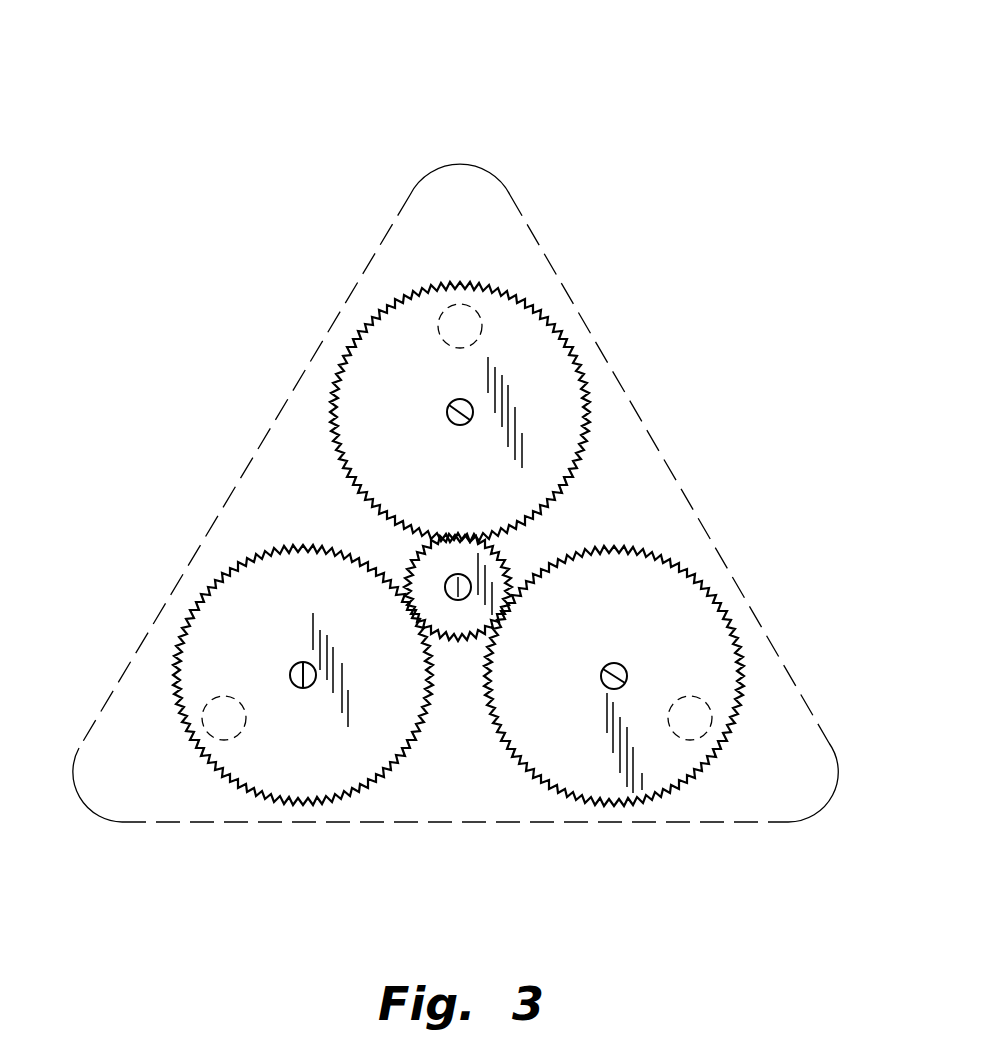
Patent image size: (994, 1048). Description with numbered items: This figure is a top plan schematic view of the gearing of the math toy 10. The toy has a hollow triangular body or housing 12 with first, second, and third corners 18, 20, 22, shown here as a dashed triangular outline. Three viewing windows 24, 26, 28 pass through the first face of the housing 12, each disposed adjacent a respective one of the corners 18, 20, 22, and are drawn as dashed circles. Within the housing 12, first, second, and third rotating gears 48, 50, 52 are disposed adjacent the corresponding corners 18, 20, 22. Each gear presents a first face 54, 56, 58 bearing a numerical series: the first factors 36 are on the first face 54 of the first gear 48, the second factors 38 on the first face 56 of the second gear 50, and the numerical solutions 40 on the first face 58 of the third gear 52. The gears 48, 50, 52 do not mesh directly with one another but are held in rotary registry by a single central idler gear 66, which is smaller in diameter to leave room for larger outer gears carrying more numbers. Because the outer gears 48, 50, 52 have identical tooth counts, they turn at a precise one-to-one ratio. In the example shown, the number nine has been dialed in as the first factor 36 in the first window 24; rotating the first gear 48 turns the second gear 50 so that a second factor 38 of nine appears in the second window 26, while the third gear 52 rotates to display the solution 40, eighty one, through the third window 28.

The math toy 10 is at (228, 74).
The triangular body or housing 12 is at (275, 425).
The first corner 18 is at (88, 803).
The second corner 20 is at (834, 803).
The third corner 22 is at (476, 167).
The first window 24 is at (203, 710).
The second window 26 is at (715, 716).
The third window 28 is at (463, 292).
The first factor 36 is at (225, 724).
The second factor 38 is at (690, 724).
The numerical solution 40 is at (479, 320).
The first gear 48 is at (172, 602).
The second gear 50 is at (724, 625).
The third gear 52 is at (560, 312).
The first face of first gear 54 is at (246, 588).
The first face of second gear 56 is at (663, 592).
The first face of third gear 58 is at (375, 352).
The central idler gear 66 is at (463, 642).